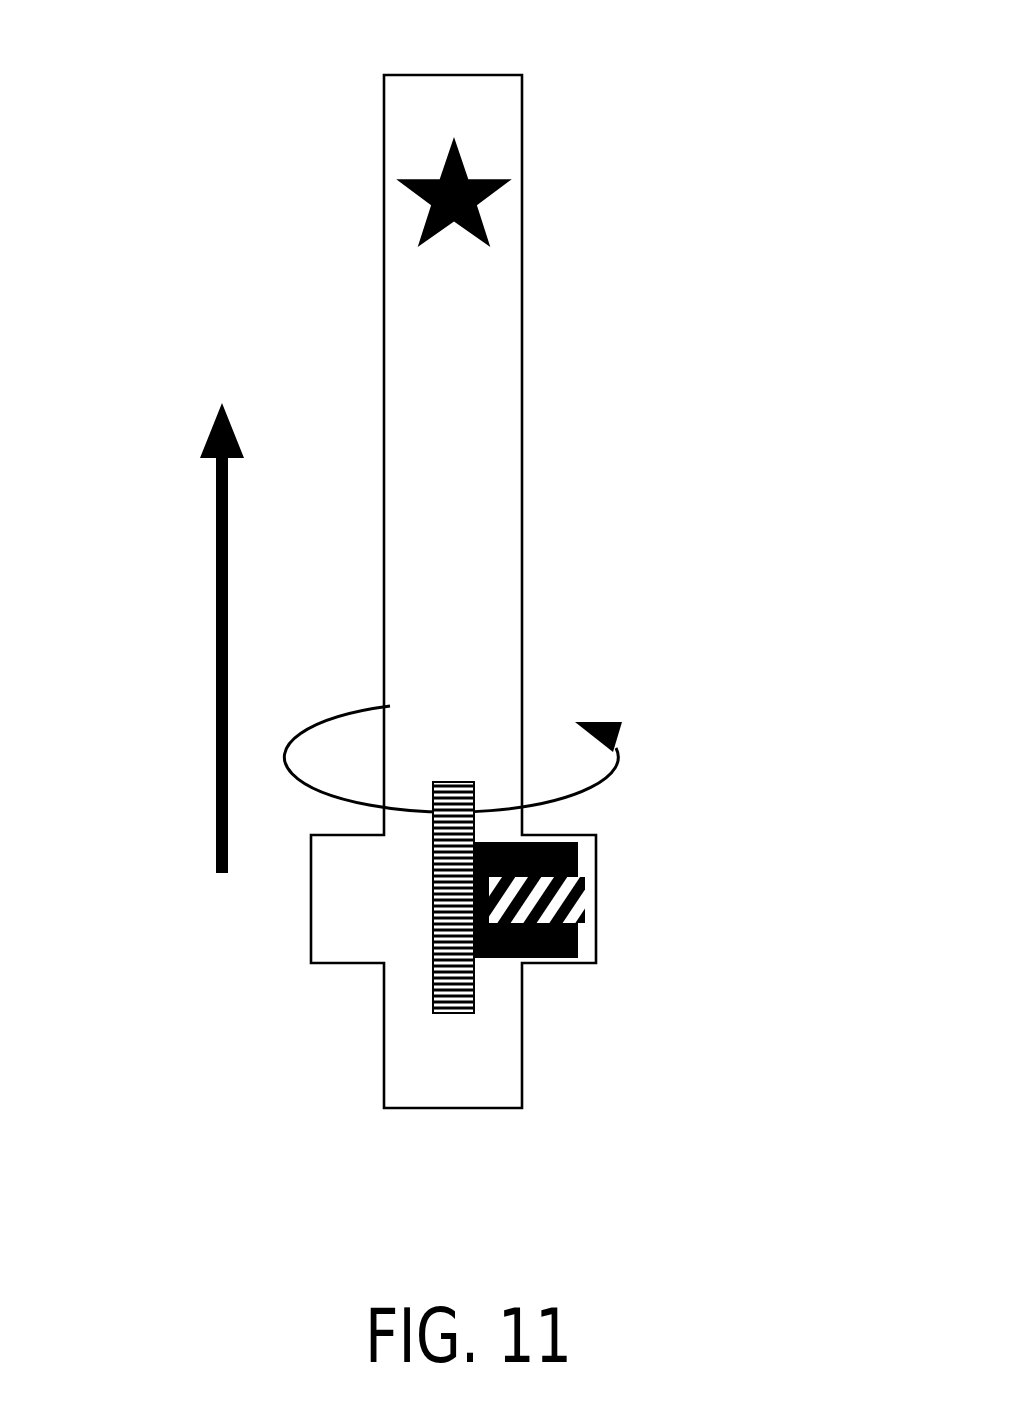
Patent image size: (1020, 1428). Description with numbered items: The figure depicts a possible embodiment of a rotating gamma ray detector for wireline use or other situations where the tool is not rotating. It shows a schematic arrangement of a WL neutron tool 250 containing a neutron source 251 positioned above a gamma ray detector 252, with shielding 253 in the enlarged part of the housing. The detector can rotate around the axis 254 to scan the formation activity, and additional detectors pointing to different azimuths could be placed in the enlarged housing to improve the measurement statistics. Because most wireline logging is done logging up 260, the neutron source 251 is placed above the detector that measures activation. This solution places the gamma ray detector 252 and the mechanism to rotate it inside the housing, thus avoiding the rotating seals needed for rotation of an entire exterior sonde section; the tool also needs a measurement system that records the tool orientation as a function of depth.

The WL neutron tool 250 is at (485, 97).
The neutron source 251 is at (517, 177).
The gamma ray detector 252 is at (590, 893).
The shielding 253 is at (570, 955).
The axis 254 is at (445, 988).
The logging up 260 is at (202, 542).